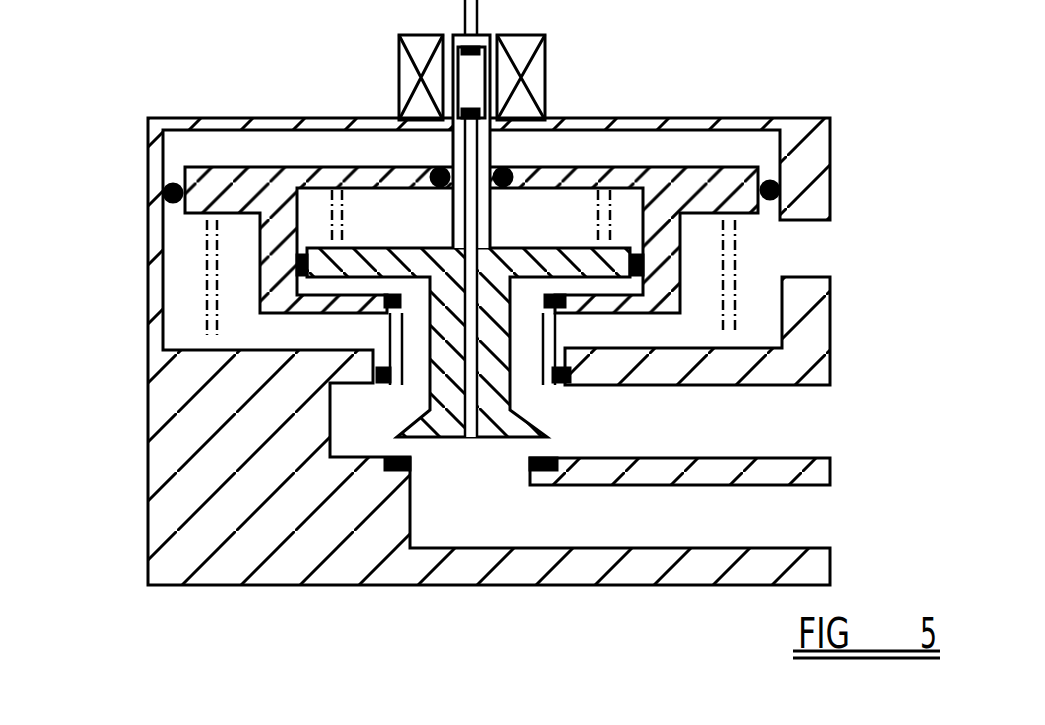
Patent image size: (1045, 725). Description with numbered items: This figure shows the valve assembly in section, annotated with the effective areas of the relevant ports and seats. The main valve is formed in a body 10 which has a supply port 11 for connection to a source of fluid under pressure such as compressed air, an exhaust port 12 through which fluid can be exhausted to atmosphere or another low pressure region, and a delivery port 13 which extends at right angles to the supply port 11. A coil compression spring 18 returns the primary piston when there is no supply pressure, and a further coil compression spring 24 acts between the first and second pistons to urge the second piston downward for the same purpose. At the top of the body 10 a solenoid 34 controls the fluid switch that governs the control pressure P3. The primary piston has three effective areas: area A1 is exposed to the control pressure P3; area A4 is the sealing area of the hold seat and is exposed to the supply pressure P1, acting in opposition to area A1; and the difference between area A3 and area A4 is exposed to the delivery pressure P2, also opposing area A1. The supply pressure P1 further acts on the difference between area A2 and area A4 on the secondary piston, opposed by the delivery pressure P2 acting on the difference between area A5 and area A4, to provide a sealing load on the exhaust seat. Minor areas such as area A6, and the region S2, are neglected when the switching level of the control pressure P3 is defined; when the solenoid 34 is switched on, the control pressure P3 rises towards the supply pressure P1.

The body 10 is at (168, 118).
The solenoid 34 is at (383, 78).
The coil compression spring 24 is at (148, 258).
The coil compression spring 18 is at (207, 318).
The exhaust port 12 is at (825, 255).
The delivery port 13 is at (820, 428).
The supply port 11 is at (828, 517).
The area A1 is at (780, 156).
The area A2 is at (643, 203).
The area A3 is at (345, 357).
The area A4 is at (537, 449).
The area A5 is at (553, 267).
The area A6 is at (513, 232).
The spring chamber S2 is at (573, 229).
The supply pressure P1 is at (717, 522).
The delivery pressure P2 is at (721, 426).
The control pressure P3 is at (613, 149).